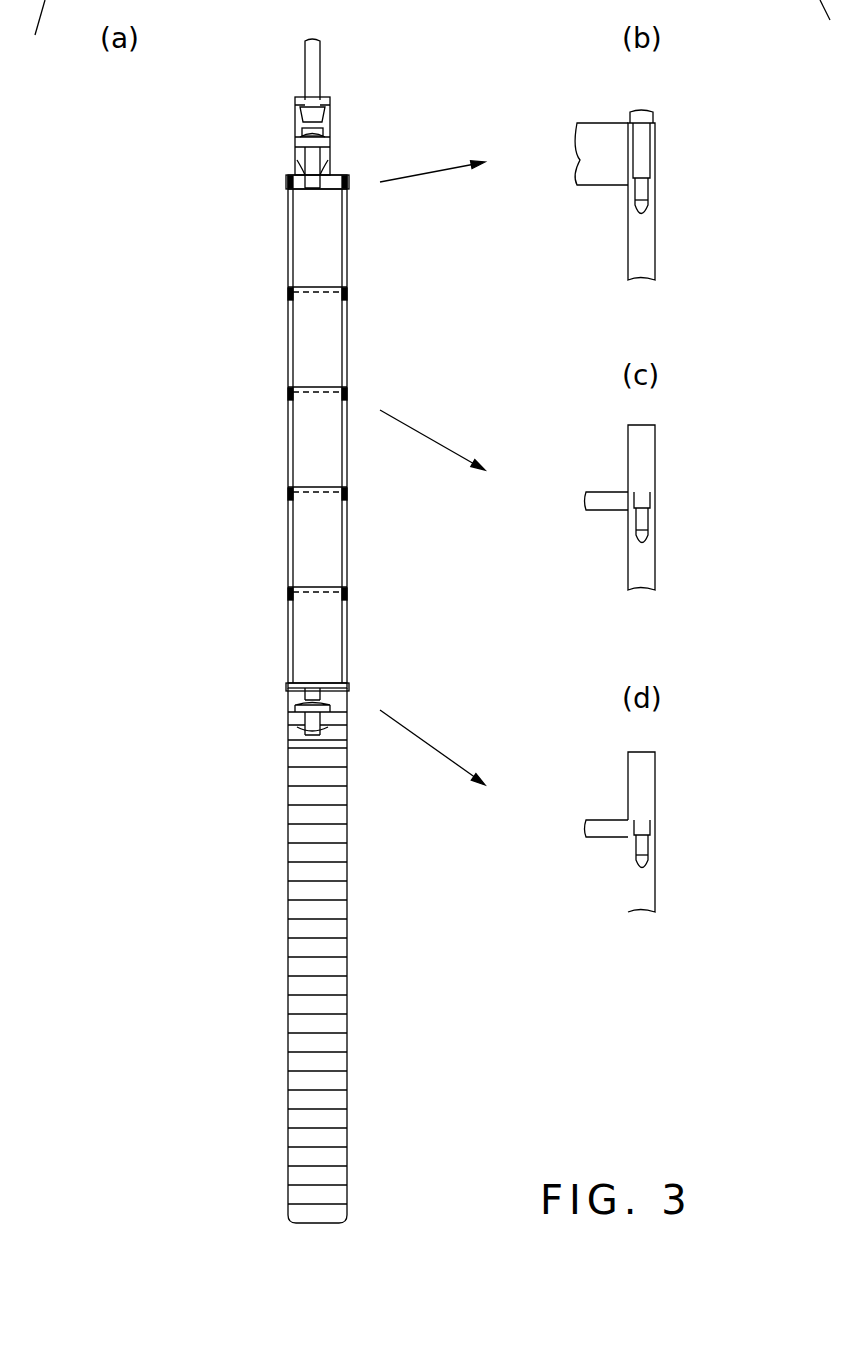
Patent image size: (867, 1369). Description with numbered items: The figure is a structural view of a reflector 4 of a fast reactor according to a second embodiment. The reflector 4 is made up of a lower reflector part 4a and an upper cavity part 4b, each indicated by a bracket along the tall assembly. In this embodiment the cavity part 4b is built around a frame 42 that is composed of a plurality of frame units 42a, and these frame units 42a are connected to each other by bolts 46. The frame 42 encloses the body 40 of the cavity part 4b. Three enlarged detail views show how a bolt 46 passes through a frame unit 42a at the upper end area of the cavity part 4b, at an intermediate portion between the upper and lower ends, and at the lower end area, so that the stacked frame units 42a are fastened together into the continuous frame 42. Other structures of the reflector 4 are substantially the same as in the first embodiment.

The reflector 4 is at (388, 118).
The reflector part 4a is at (235, 712).
The cavity part 4b is at (235, 175).
The frame 42 is at (360, 316).
The frame unit 42a is at (345, 546).
The reflector body 40 is at (330, 634).
The bolt 46 is at (650, 192).